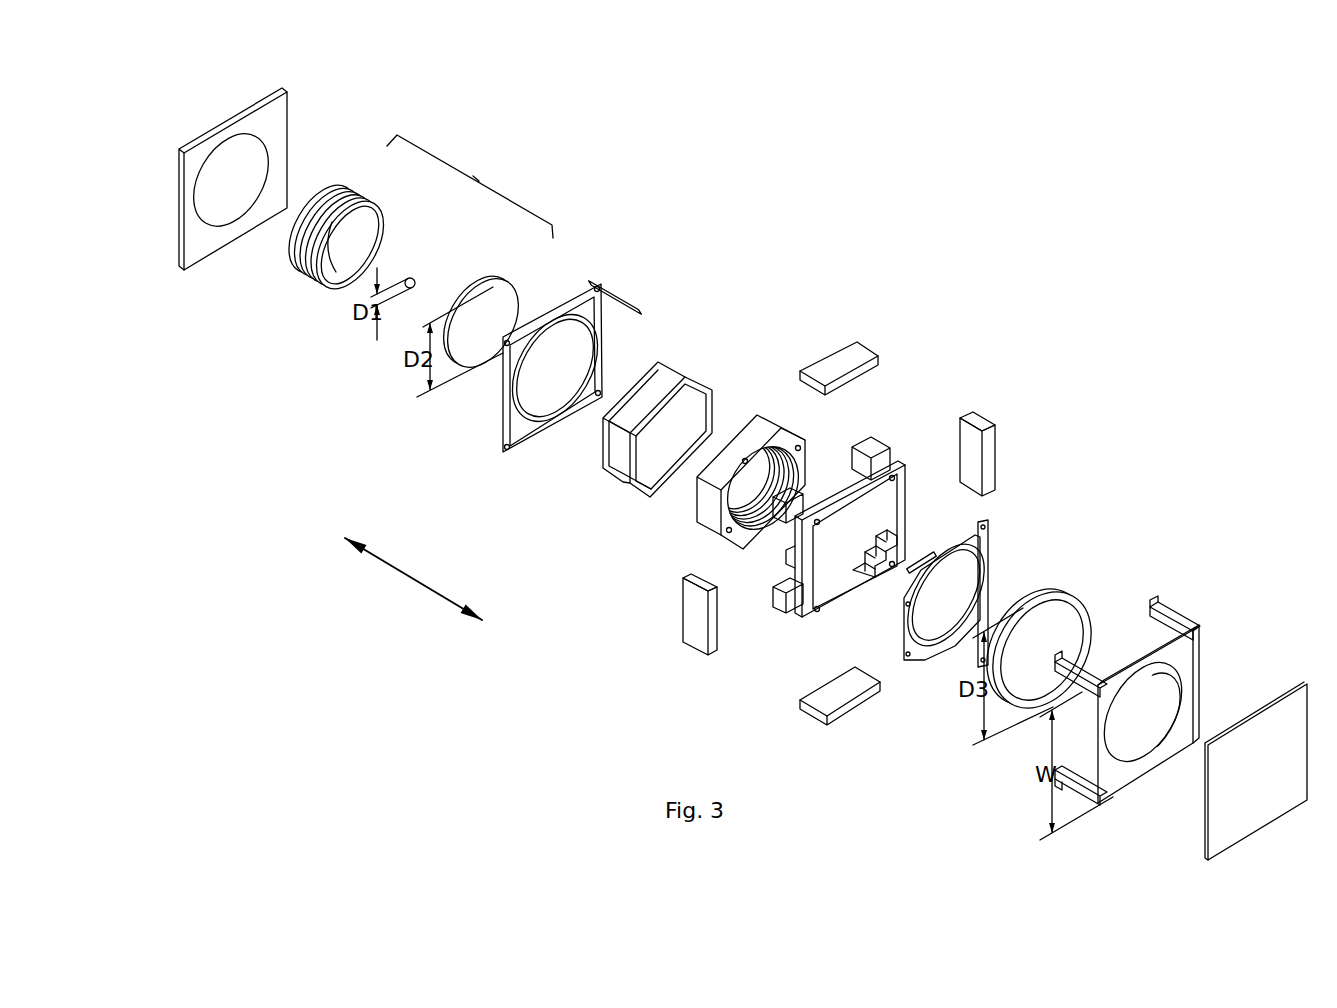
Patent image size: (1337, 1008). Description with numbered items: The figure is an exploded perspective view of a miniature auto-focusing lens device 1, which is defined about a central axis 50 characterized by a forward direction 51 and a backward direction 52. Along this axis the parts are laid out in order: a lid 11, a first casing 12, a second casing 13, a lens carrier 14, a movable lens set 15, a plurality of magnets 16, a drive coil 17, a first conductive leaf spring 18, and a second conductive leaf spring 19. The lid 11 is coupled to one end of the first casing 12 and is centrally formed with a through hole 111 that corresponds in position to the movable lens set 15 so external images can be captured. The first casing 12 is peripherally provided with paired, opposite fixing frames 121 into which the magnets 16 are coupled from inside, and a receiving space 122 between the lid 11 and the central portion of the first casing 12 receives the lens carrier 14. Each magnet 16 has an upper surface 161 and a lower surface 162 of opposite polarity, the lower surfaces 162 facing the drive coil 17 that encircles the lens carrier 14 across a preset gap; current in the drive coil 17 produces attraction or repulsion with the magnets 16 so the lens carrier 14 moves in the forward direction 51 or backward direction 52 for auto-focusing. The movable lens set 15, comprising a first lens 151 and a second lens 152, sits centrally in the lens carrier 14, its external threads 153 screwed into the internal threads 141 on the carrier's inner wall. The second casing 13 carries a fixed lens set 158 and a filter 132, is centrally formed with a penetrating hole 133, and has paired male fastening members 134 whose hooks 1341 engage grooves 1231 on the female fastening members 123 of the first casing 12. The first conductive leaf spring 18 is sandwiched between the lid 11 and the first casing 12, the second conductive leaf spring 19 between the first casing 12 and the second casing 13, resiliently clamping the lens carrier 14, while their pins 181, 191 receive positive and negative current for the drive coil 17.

The miniature auto-focusing lens device 1 is at (1087, 279).
The lid 11 is at (277, 169).
The through hole 111 is at (293, 113).
The first casing 12 is at (846, 506).
The fixing frames 121 is at (845, 473).
The receiving space 122 is at (840, 580).
The female fastening members 123 is at (815, 492).
The groove 1231 is at (792, 552).
The second casing 13 is at (1165, 681).
The filter 132 is at (1257, 750).
The penetrating hole 133 is at (1157, 697).
The male fastening members 134 is at (1145, 681).
The hook 1341 is at (1153, 605).
The lens carrier 14 is at (719, 459).
The internal threads 141 is at (737, 508).
The movable lens set 15 is at (414, 257).
The first lens 151 is at (416, 280).
The second lens 152 is at (505, 293).
The external threads 153 is at (360, 193).
The fixed lens set 158 is at (1073, 603).
The magnets 16 is at (840, 540).
The upper surface 161 is at (840, 363).
The lower surface 162 is at (878, 373).
The drive coil 17 is at (665, 372).
The first conductive leaf spring 18 is at (602, 327).
The pin 181 is at (630, 300).
The second conductive leaf spring 19 is at (982, 582).
The pin 191 is at (920, 557).
The central axis 50 is at (380, 610).
The forward direction 51 is at (350, 548).
The backward direction 52 is at (461, 612).